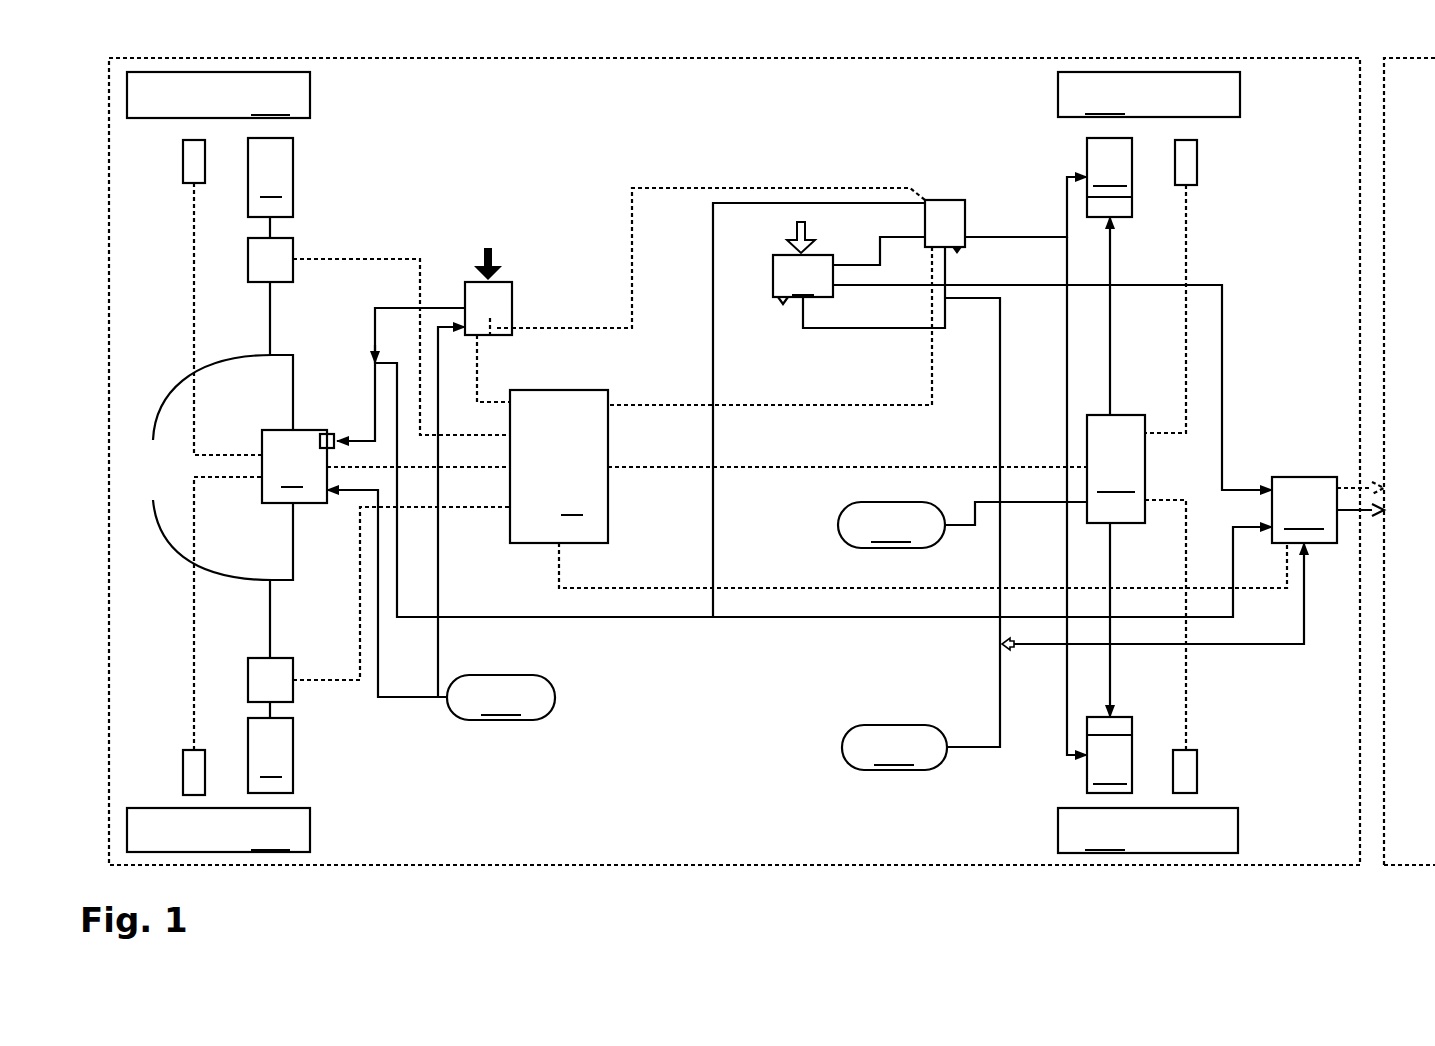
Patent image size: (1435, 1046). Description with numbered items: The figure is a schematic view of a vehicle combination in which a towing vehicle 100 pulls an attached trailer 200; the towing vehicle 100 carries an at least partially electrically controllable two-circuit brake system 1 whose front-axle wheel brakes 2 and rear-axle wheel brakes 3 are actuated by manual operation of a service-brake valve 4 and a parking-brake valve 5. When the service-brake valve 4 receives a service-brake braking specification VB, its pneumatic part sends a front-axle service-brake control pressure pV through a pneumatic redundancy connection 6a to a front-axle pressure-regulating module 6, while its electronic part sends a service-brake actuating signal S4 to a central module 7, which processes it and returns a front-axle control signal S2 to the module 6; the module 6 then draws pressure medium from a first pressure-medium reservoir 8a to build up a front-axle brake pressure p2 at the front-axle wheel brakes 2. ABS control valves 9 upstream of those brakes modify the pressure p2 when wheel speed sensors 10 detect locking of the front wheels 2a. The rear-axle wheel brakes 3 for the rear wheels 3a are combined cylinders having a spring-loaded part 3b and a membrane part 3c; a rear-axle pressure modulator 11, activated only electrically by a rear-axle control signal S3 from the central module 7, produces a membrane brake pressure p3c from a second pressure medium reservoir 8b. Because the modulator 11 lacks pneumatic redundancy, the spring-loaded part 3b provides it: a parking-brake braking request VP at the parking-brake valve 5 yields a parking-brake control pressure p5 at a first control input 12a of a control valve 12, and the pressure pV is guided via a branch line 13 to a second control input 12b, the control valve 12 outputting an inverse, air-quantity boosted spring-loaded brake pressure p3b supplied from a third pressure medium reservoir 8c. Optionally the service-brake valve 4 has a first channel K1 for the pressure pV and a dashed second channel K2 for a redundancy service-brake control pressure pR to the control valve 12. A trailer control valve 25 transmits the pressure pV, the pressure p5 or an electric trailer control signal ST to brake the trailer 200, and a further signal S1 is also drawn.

The brake system 1 is at (513, 760).
The front-axle wheel brakes 2 is at (270, 465).
The front wheels 2a is at (218, 462).
The rear-axle wheel brakes 3 is at (1070, 145).
The rear wheels 3a is at (1149, 462).
The spring-loaded part 3b is at (1109, 465).
The membrane part 3c is at (1132, 207).
The service-brake valve 4 is at (465, 288).
The parking-brake valve 5 is at (819, 410).
The front-axle pressure-regulating module 6 is at (294, 466).
The pneumatic redundancy connection 6a is at (326, 433).
The central module 7 is at (450, 535).
The first pressure-medium reservoir 8a is at (501, 697).
The second pressure medium reservoir 8b is at (962, 525).
The third pressure medium reservoir 8c is at (894, 747).
The ABS control valves 9 is at (248, 262).
The wheel speed sensors 10 is at (183, 160).
The rear-axle pressure modulator 11 is at (1116, 469).
The control valve 12 is at (945, 195).
The first control input 12a is at (922, 198).
The second control input 12b is at (923, 237).
The branch line 13 is at (375, 344).
The trailer control valve 25 is at (1328, 510).
The towing vehicle 100 is at (736, 866).
The trailer 200 is at (1417, 866).
The front-axle service-brake control pressure pV is at (398, 306).
The redundancy service-brake control pressure pR is at (720, 188).
The front-axle brake pressure p2 is at (213, 470).
The parking-brake control pressure p5 is at (878, 237).
The spring-loaded brake pressure p3b is at (1027, 237).
The membrane brake pressure p3c is at (1110, 328).
The first channel K1 is at (510, 280).
The second channel K2 is at (500, 320).
The first signal S1 is at (930, 405).
The front-axle control signal S2 is at (418, 470).
The rear-axle control signal S3 is at (863, 468).
The service-brake actuating signal S4 is at (477, 370).
The electric trailer control signal ST is at (922, 590).
The service-brake braking specification VB is at (486, 242).
The parking-brake braking request VP is at (776, 237).